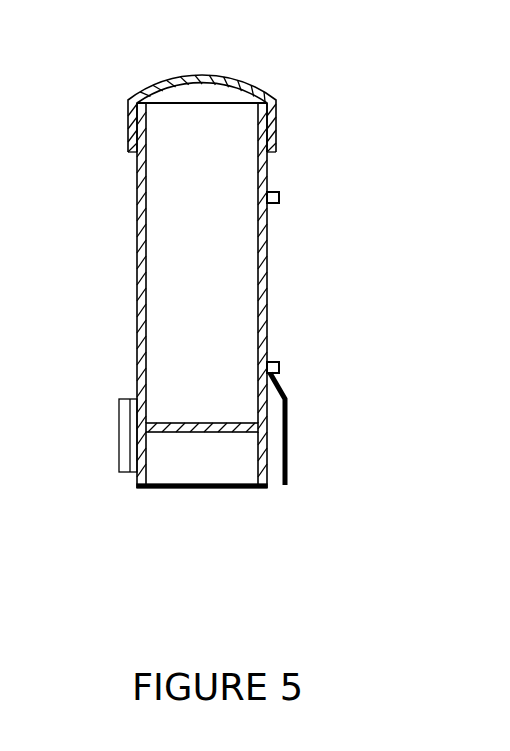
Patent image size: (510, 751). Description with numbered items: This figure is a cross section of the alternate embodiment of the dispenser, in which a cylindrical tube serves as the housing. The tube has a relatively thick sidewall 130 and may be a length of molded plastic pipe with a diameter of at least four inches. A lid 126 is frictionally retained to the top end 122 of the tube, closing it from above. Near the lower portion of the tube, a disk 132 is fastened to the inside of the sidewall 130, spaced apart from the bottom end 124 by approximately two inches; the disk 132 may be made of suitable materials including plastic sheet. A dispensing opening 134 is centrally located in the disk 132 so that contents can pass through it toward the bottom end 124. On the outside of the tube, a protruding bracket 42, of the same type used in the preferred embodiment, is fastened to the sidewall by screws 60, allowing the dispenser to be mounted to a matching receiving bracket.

The protruding bracket 42 is at (244, 295).
The screws 60 is at (321, 260).
The top end 122 is at (147, 175).
The bottom end 124 is at (163, 533).
The lid 126 is at (255, 77).
The sidewall 130 is at (78, 295).
The disk 132 is at (253, 493).
The dispensing opening 134 is at (172, 519).